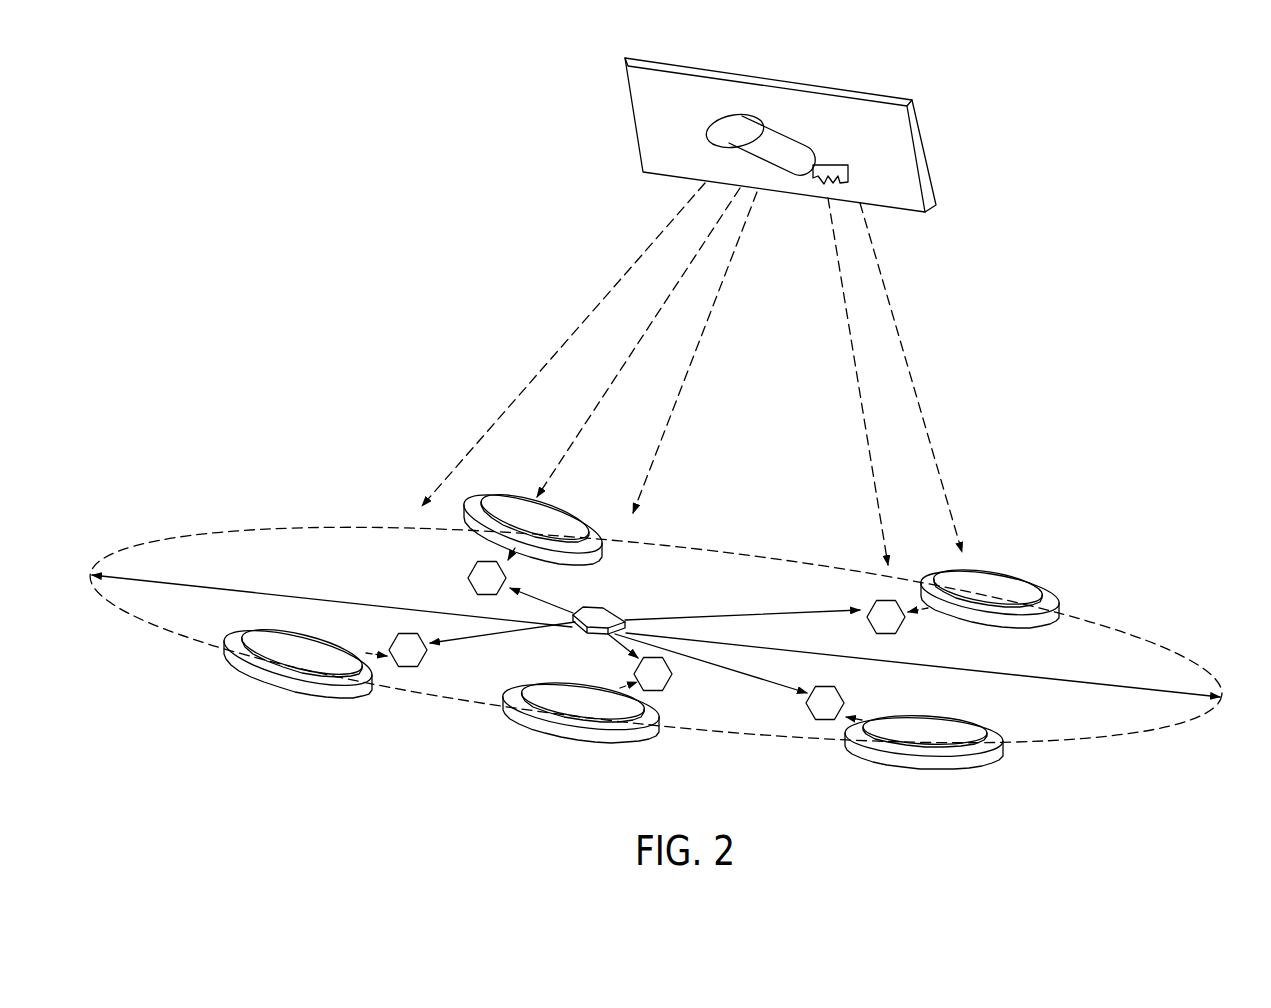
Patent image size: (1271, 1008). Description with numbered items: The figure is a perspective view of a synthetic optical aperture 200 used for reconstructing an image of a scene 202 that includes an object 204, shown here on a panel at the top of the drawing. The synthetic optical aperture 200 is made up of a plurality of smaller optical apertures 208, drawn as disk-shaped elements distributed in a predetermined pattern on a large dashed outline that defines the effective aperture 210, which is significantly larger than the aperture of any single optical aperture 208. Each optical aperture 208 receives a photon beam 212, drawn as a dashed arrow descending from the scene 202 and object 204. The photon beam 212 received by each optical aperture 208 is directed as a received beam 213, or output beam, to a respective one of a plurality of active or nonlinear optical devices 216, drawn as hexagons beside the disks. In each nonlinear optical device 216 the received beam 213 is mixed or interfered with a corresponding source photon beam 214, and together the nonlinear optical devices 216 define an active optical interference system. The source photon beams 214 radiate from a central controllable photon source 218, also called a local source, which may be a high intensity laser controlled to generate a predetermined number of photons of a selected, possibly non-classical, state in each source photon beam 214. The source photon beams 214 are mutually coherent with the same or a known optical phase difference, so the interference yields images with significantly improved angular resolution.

The synthetic optical aperture 200 is at (1078, 470).
The scene 202 is at (925, 158).
The object 204 is at (782, 122).
The optical aperture 208 is at (509, 492).
The effective aperture 210 is at (232, 588).
The photon beam 212 is at (598, 297).
The received beam 213 is at (503, 548).
The source photon beam 214 is at (542, 597).
The nonlinear optical device 216 is at (468, 578).
The controllable photon source 218 is at (613, 612).